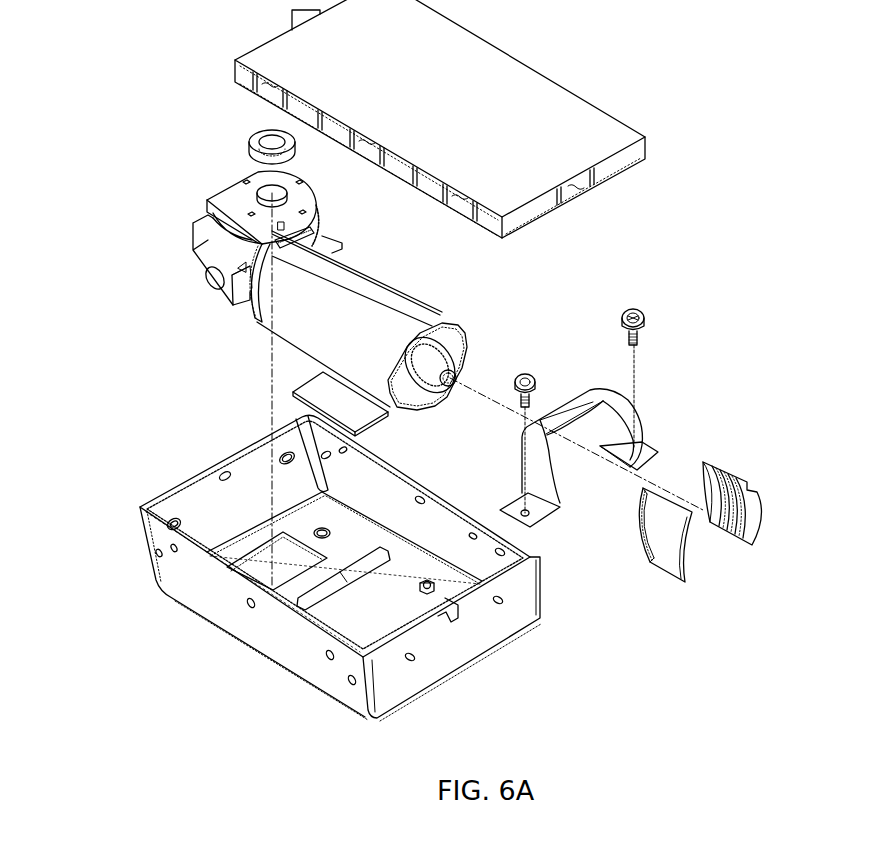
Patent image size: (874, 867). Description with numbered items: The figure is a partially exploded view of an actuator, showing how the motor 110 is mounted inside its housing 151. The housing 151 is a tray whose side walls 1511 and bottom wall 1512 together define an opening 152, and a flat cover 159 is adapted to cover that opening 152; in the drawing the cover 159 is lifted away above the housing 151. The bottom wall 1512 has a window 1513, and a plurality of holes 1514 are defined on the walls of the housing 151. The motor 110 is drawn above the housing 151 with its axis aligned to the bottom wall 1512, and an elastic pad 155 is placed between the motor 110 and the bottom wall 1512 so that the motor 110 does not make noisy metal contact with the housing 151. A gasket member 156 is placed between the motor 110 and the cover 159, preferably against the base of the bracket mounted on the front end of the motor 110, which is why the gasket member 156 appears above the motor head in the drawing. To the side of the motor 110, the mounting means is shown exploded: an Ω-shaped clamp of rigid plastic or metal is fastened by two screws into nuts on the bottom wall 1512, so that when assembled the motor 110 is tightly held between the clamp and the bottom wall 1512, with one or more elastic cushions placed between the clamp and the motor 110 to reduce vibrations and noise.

The cover 159 is at (542, 98).
The gasket member 156 is at (253, 142).
The motor 110 is at (405, 318).
The elastic pad 155 is at (315, 393).
The housing 151 is at (357, 658).
The side walls 1511 is at (238, 600).
The bottom wall 1512 is at (340, 618).
The window 1513 is at (265, 572).
The holes 1514 is at (157, 557).
The opening 152 is at (395, 610).